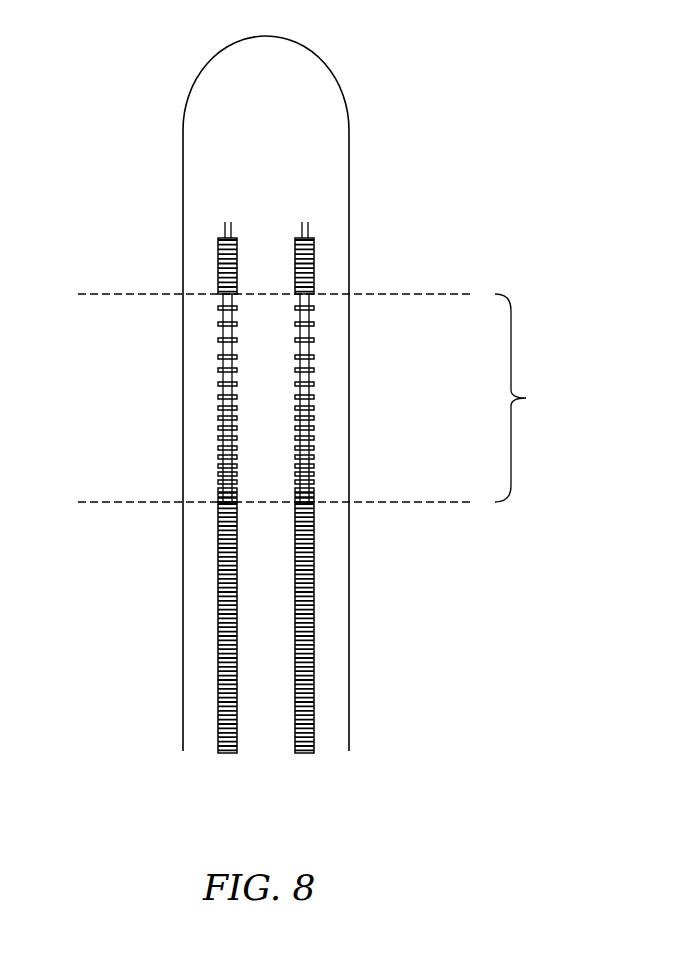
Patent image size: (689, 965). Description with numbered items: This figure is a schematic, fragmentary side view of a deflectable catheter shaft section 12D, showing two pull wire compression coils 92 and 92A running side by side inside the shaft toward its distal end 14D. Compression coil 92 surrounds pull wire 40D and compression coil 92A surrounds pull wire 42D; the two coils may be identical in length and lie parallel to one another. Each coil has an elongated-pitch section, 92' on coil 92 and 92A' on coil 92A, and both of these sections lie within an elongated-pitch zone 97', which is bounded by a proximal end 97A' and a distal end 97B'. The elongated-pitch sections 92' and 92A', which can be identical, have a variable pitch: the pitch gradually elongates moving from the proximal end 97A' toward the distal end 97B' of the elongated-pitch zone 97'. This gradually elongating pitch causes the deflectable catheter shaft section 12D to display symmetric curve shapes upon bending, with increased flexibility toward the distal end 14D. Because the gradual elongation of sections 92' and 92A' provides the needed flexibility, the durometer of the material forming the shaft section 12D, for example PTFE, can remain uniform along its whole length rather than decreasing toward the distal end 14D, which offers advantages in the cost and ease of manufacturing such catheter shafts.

The deflectable catheter shaft section 12D is at (350, 548).
The distal end 14D is at (322, 60).
The pull wire 40D is at (225, 232).
The pull wire 42D is at (305, 233).
The pull wire compression coil 92 is at (176, 523).
The pull wire compression coil 92A is at (362, 523).
The elongated-pitch section 92' is at (177, 398).
The elongated-pitch section 92A' is at (362, 398).
The elongated-pitch zone 97' is at (528, 398).
The proximal end of elongated-pitch zone 97A' is at (251, 501).
The distal end of elongated-pitch zone 97B' is at (251, 293).